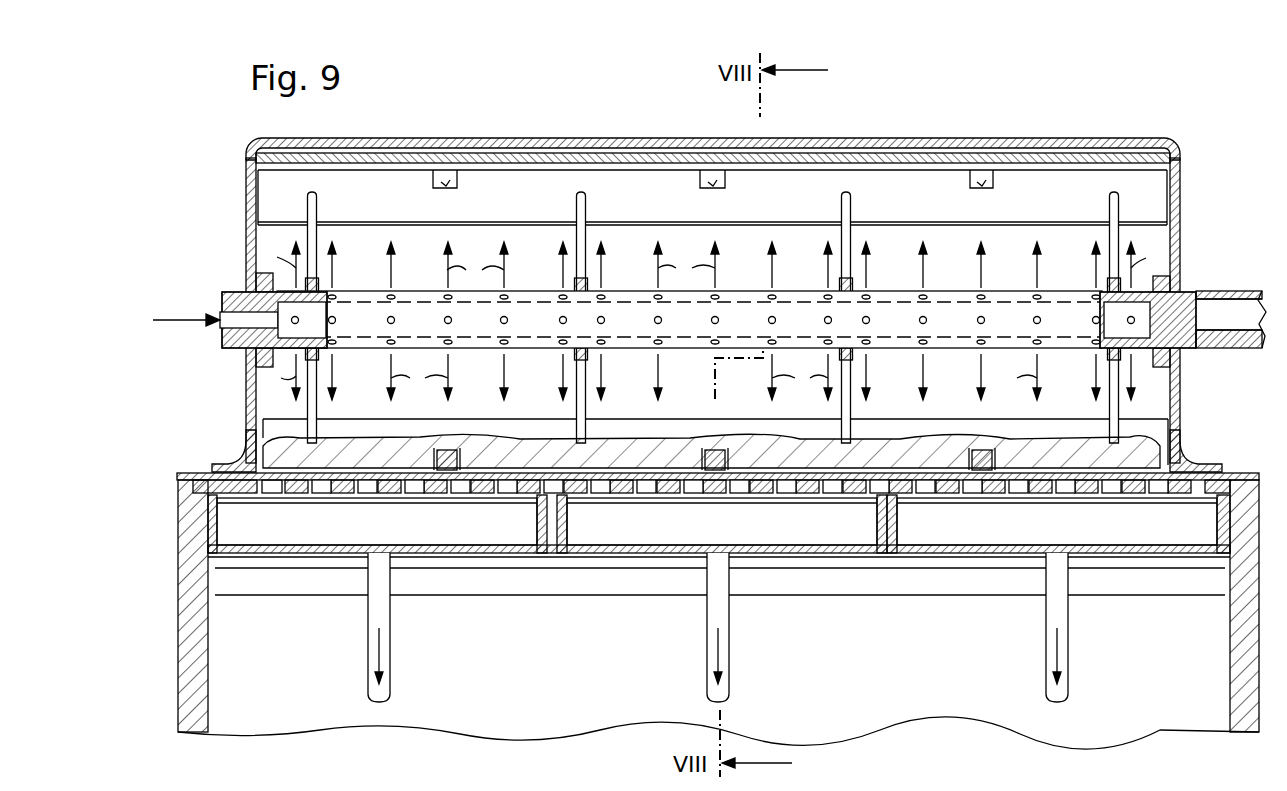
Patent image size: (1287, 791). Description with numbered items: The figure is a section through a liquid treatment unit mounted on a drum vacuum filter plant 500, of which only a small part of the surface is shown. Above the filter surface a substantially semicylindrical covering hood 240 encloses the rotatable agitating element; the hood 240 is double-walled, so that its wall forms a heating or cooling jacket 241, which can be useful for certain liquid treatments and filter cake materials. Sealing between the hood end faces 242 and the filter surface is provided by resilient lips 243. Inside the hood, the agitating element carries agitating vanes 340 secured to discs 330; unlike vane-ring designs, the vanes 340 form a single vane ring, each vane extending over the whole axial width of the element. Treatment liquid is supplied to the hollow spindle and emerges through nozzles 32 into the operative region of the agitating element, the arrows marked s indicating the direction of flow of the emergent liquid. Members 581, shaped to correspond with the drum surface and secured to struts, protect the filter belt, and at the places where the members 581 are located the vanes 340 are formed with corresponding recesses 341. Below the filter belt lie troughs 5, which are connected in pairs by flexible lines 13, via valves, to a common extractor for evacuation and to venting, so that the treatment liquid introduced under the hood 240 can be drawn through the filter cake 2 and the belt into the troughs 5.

The drum vacuum filter plant 500 is at (709, 295).
The covering hood 240 is at (885, 138).
The heating or cooling jacket 241 is at (515, 160).
The hood end face 242 is at (246, 207).
The resilient lip 243 is at (238, 462).
The agitating vane 340 is at (723, 210).
The recess 341 is at (457, 186).
The disc 330 is at (576, 420).
The nozzle 32 is at (1128, 352).
The material layer 2 is at (946, 440).
The protective member 581 is at (447, 472).
The trough 5 is at (493, 555).
The flexible line 13 is at (378, 632).